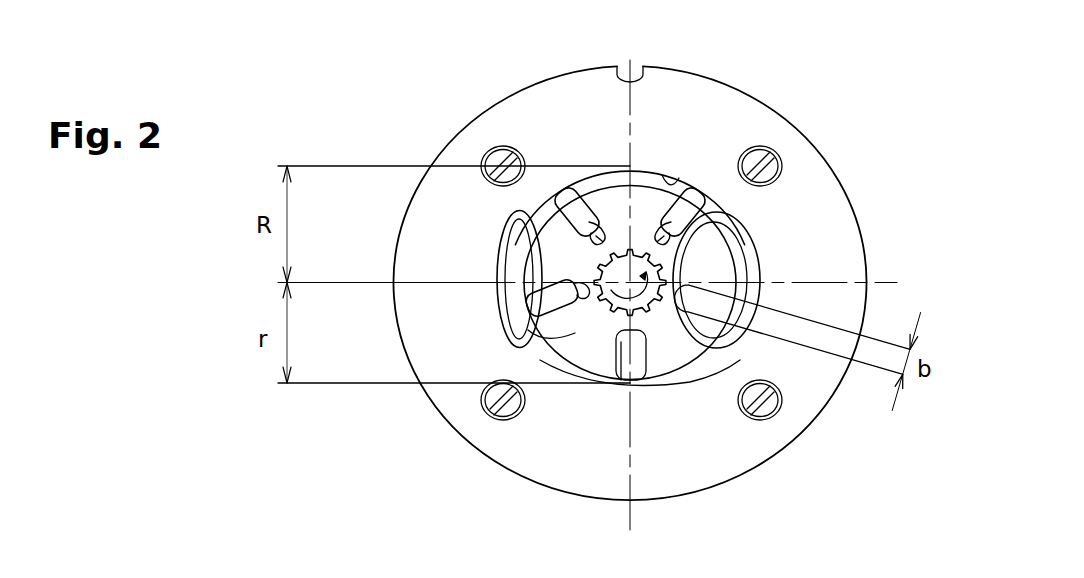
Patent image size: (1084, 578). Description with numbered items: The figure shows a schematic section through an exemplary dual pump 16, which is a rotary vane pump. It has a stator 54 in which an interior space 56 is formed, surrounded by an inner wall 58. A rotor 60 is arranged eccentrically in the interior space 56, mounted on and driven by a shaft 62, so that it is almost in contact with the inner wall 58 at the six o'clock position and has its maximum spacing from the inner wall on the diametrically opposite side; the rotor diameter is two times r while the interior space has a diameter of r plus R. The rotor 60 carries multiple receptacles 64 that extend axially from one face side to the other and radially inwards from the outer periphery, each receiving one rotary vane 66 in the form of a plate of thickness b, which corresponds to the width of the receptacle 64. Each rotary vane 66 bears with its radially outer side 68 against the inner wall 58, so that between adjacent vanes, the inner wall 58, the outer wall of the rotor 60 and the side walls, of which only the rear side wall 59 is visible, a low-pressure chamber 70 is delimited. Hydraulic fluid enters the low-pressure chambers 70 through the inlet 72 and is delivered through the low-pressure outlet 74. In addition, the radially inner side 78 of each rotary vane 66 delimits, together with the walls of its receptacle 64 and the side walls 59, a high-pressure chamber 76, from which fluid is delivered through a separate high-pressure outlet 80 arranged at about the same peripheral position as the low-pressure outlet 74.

The dual pump 16 is at (888, 107).
The stator 54 is at (808, 158).
The interior space 56 is at (604, 178).
The inner wall 58 is at (690, 192).
The side wall 59 is at (757, 255).
The rotor 60 is at (672, 362).
The shaft 62 is at (612, 303).
The receptacle 64 is at (601, 236).
The rotary vane 66 is at (638, 368).
The radially outer side 68 is at (704, 182).
The low-pressure chamber 70 is at (547, 212).
The inlet 72 is at (745, 245).
The low-pressure outlet 74 is at (493, 235).
The high-pressure chamber 76 is at (760, 265).
The radially inner side 78 is at (607, 240).
The high-pressure outlet 80 is at (570, 335).